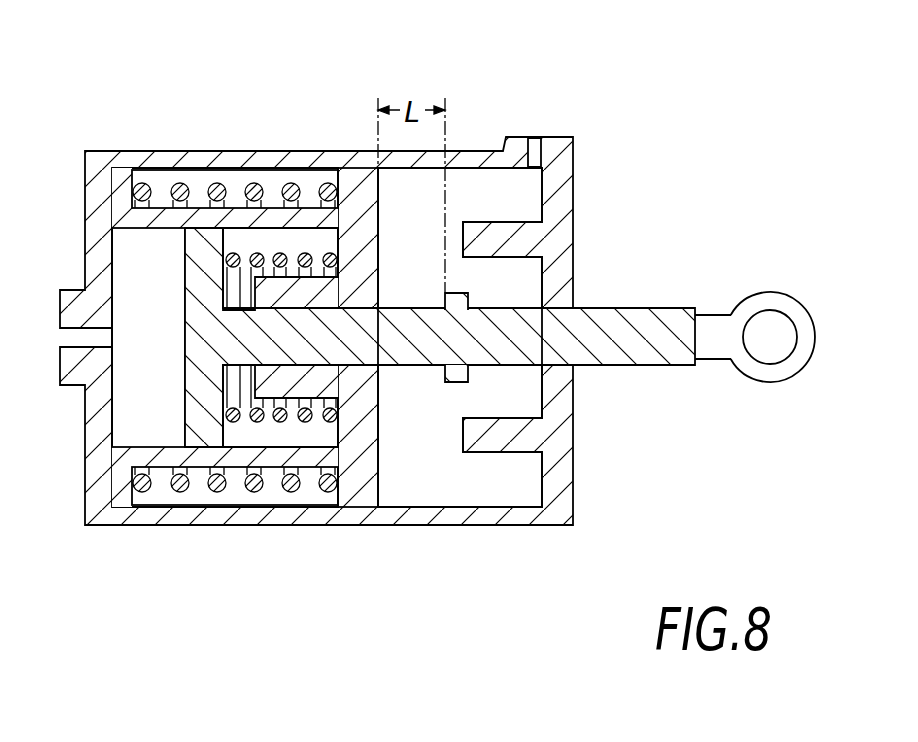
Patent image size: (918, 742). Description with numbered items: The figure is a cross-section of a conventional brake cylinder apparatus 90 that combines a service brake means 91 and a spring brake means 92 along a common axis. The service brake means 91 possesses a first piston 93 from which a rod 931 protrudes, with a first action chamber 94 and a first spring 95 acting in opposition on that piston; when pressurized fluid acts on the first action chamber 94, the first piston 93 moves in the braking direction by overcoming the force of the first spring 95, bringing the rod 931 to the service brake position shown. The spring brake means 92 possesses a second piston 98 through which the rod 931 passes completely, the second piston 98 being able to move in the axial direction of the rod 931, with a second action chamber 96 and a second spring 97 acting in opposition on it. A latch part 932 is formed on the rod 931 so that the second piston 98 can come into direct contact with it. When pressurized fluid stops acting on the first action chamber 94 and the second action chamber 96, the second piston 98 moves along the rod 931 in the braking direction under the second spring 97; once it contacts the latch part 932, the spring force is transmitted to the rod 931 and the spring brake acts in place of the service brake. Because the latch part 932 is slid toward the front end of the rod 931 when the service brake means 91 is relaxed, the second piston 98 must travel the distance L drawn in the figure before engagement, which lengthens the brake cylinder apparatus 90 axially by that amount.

The brake cylinder apparatus 90 is at (605, 148).
The service brake means 91 is at (130, 112).
The spring brake means 92 is at (273, 577).
The first piston 93 is at (205, 238).
The first action chamber 94 is at (152, 245).
The first spring 95 is at (277, 248).
The second action chamber 96 is at (413, 490).
The second spring 97 is at (290, 493).
The second piston 98 is at (350, 490).
The rod 931 is at (630, 308).
The latch part 932 is at (448, 384).